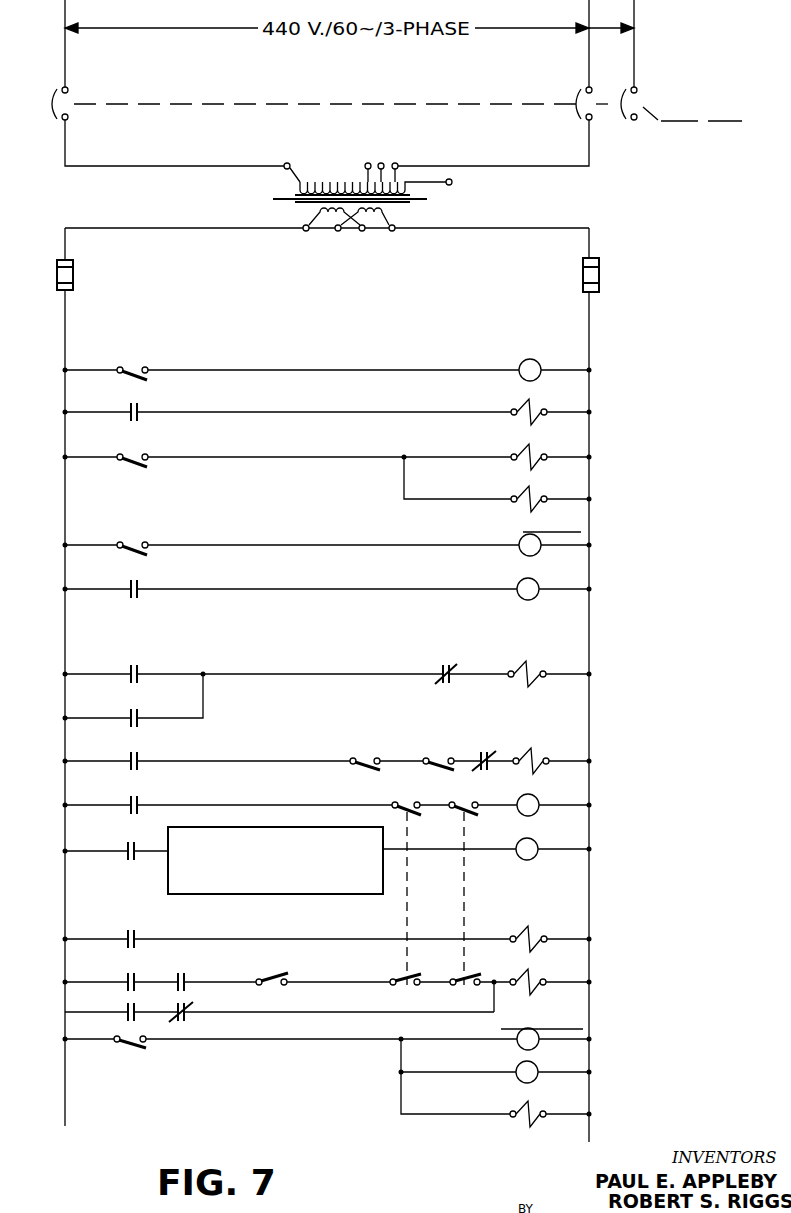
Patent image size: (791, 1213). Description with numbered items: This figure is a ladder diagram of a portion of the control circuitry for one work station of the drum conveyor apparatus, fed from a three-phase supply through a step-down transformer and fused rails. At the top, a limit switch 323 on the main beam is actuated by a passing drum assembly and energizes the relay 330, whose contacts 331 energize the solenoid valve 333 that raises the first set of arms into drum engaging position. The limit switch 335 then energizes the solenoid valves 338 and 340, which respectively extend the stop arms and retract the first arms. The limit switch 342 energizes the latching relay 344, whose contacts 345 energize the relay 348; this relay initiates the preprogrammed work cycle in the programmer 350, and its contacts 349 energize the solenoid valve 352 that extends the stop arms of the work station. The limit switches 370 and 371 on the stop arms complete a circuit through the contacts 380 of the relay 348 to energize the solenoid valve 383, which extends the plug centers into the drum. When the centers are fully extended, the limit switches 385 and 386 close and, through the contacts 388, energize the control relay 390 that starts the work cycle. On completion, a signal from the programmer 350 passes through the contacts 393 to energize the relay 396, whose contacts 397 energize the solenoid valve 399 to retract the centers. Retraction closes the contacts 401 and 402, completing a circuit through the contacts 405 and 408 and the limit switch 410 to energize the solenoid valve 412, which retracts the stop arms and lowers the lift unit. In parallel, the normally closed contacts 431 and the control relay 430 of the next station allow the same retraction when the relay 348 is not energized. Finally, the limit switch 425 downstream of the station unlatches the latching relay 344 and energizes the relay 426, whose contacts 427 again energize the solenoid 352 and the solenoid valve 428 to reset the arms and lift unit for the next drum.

The limit switch 323 is at (130, 367).
The relay 330 is at (530, 359).
The contacts 331 is at (140, 408).
The solenoid valve 333 is at (523, 405).
The limit switch 335 is at (128, 457).
The solenoid valve 338 is at (523, 450).
The solenoid valve 340 is at (521, 493).
The limit switch 342 is at (128, 546).
The latching relay 344 is at (519, 539).
The contacts 345 is at (140, 590).
The relay 348 is at (518, 585).
The contacts 349 is at (138, 673).
The solenoid valve 352 is at (521, 668).
The contacts 427 is at (138, 717).
The contacts 380 is at (138, 761).
The limit switch 370 is at (355, 757).
The limit switch 371 is at (428, 757).
The contacts 397 is at (484, 751).
The solenoid valve 383 is at (530, 754).
The contacts 388 is at (138, 806).
The limit switch 385 is at (393, 802).
The limit switch 386 is at (466, 803).
The control relay 390 is at (528, 806).
The contacts 393 is at (128, 850).
The programmer 350 is at (275, 894).
The relay 396 is at (527, 850).
The solenoid valve 399 is at (536, 933).
The contacts 405 is at (128, 982).
The contacts 408 is at (185, 982).
The limit switch 410 is at (284, 975).
The contacts 401 is at (399, 971).
The contacts 402 is at (455, 981).
The solenoid valve 412 is at (526, 977).
The control relay 430 is at (128, 1012).
The contacts 431 is at (186, 1012).
The limit switch 425 is at (121, 1045).
The relay 426 is at (518, 1068).
The solenoid valve 428 is at (520, 1108).